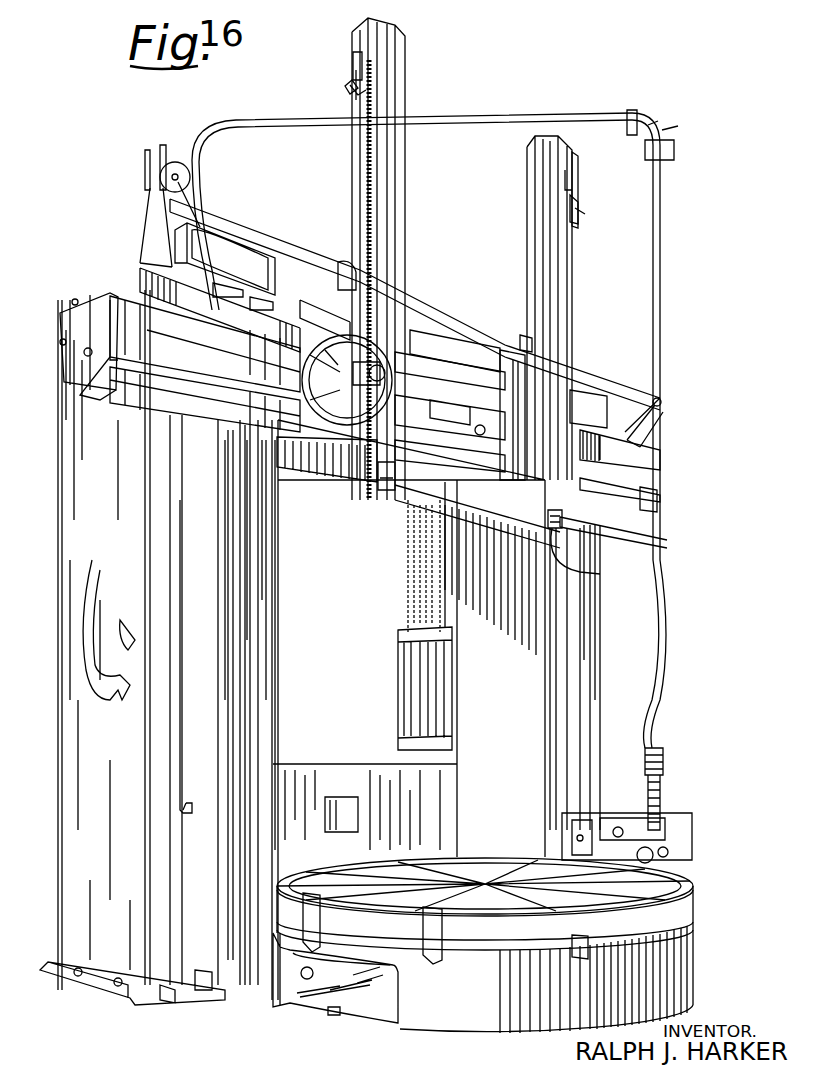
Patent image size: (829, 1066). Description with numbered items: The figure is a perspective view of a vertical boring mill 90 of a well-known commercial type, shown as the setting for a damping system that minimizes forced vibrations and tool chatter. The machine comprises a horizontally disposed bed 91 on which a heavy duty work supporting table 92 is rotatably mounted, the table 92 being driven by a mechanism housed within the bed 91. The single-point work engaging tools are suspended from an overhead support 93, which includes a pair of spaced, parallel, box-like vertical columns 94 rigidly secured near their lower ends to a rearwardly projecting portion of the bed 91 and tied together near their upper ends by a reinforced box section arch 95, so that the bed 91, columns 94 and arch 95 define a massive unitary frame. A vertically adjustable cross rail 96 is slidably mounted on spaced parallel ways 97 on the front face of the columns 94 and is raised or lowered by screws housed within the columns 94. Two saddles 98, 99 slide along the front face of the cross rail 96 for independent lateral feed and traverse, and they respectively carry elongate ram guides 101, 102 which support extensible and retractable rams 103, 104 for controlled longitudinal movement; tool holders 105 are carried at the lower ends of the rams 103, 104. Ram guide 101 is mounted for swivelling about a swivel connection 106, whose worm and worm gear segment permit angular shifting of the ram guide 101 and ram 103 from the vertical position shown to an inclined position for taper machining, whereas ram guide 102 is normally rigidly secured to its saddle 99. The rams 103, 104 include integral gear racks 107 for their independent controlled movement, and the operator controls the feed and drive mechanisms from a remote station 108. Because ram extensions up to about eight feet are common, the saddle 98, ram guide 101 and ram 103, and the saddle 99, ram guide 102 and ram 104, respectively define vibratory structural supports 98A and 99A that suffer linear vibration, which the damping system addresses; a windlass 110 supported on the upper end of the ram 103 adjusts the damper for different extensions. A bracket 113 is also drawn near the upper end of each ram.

The vertical boring mill 90 is at (691, 350).
The bed 91 is at (410, 1022).
The work supporting table 92 is at (503, 865).
The overhead support 93 is at (335, 500).
The vertical columns 94 is at (68, 748).
The box section arch 95 is at (455, 340).
The cross rail 96 is at (165, 325).
The ways 97 is at (268, 608).
The saddle 98 is at (310, 295).
The vibratory structural support 98A is at (428, 312).
The saddle 99 is at (505, 385).
The vibratory structural support 99A is at (528, 316).
The ram guide 101 is at (362, 270).
The ram guide 102 is at (535, 342).
The ram 103 is at (381, 325).
The ram 104 is at (571, 292).
The tool holders 105 is at (388, 492).
The swivel connection 106 is at (322, 378).
The gear racks 107 is at (366, 160).
The remote station 108 is at (663, 795).
The windlass 110 is at (323, 69).
The bracket 113 is at (352, 42).